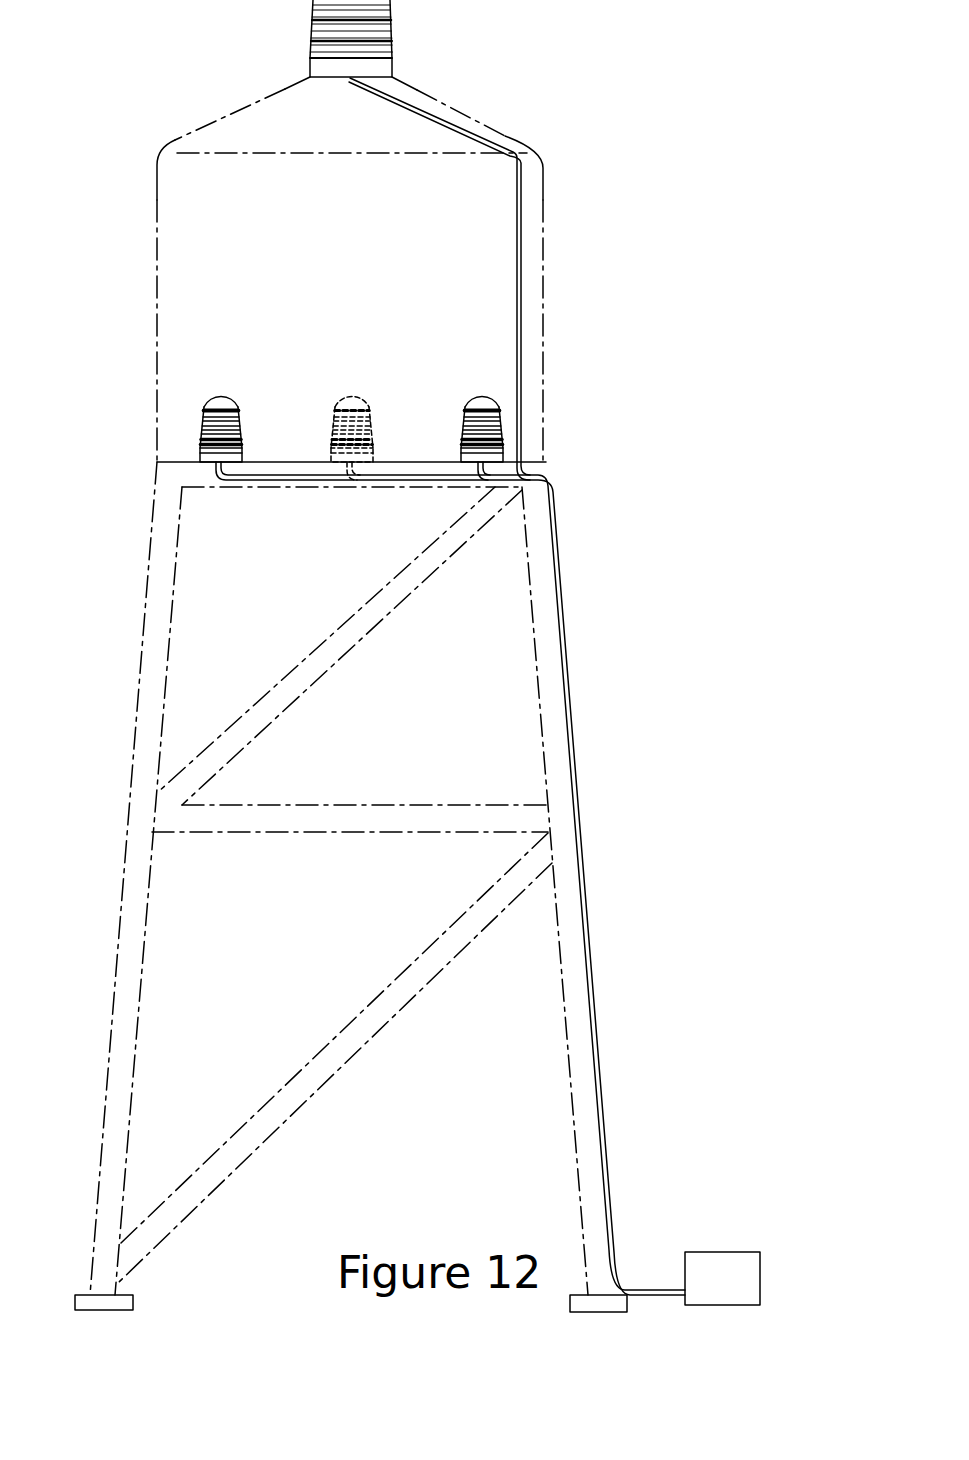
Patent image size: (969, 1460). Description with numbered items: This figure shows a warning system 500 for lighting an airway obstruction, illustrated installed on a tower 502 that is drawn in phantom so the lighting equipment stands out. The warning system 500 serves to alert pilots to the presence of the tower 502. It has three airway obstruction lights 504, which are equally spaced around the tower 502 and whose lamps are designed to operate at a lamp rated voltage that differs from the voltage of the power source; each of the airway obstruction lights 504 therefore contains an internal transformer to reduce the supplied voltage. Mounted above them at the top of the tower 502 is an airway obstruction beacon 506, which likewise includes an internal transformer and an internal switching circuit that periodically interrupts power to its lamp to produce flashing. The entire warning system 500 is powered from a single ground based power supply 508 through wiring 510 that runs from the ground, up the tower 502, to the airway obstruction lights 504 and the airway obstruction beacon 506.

The warning system 500 is at (610, 120).
The tower 502 is at (545, 397).
The airway obstruction lights 504 is at (473, 395).
The airway obstruction beacon 506 is at (390, 46).
The ground based power supply 508 is at (710, 1252).
The wiring 510 is at (553, 498).